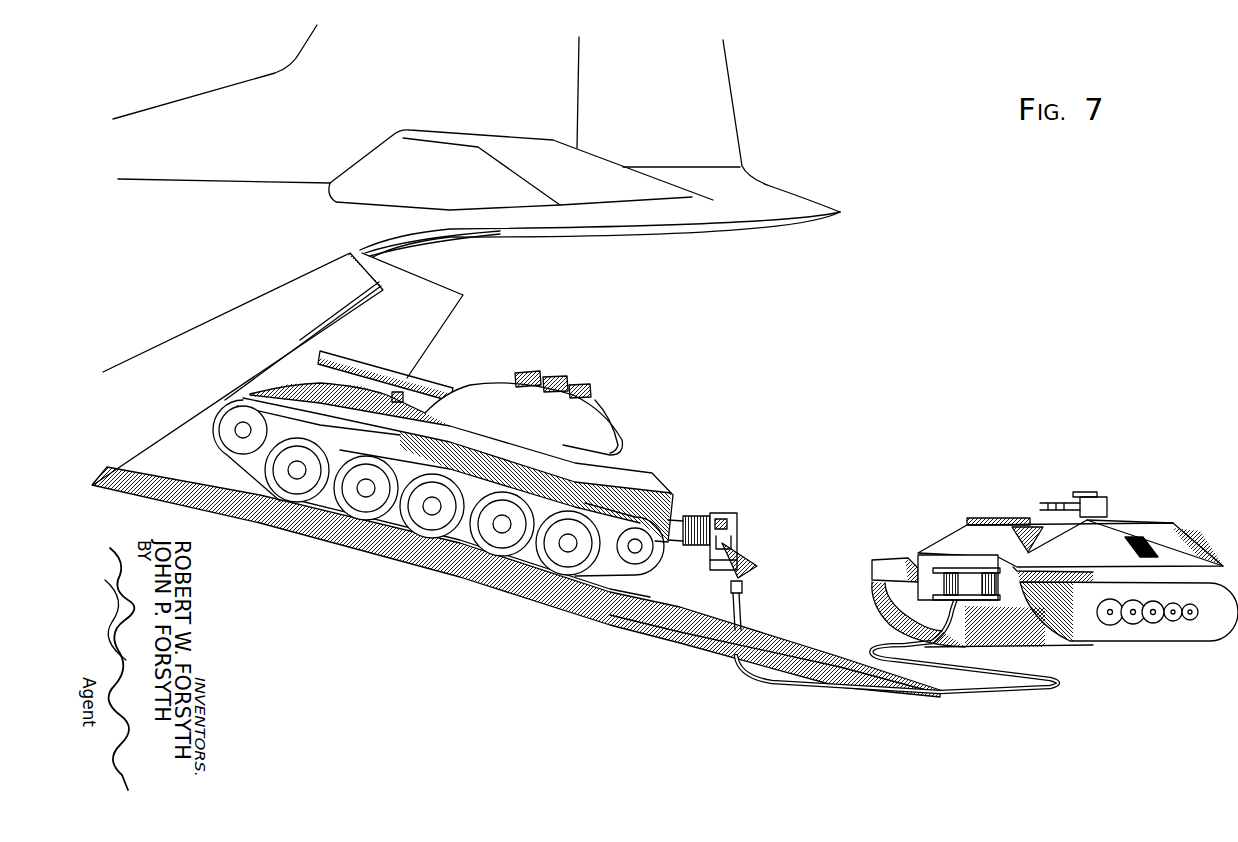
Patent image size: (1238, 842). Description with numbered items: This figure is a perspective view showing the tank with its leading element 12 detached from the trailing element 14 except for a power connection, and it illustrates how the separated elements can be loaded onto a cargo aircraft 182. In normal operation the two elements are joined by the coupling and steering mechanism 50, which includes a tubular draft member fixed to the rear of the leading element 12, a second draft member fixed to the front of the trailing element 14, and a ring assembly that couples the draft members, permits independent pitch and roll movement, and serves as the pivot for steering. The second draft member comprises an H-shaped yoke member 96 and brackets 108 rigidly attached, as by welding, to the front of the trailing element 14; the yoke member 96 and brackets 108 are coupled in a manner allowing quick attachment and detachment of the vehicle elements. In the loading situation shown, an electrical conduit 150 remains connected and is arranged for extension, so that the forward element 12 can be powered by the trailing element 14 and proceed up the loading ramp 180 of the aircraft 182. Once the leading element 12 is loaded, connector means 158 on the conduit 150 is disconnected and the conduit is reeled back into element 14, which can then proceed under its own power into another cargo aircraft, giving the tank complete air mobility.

The leading element 12 is at (652, 390).
The trailing element 14 is at (1055, 545).
The coupling and steering mechanism 50 is at (742, 491).
The H-shaped yoke member 96 is at (752, 548).
The brackets 108 is at (933, 553).
The electrical conduit 150 is at (739, 612).
The connector means 158 is at (742, 586).
The loading ramp 180 is at (612, 633).
The cargo aircraft 182 is at (617, 233).